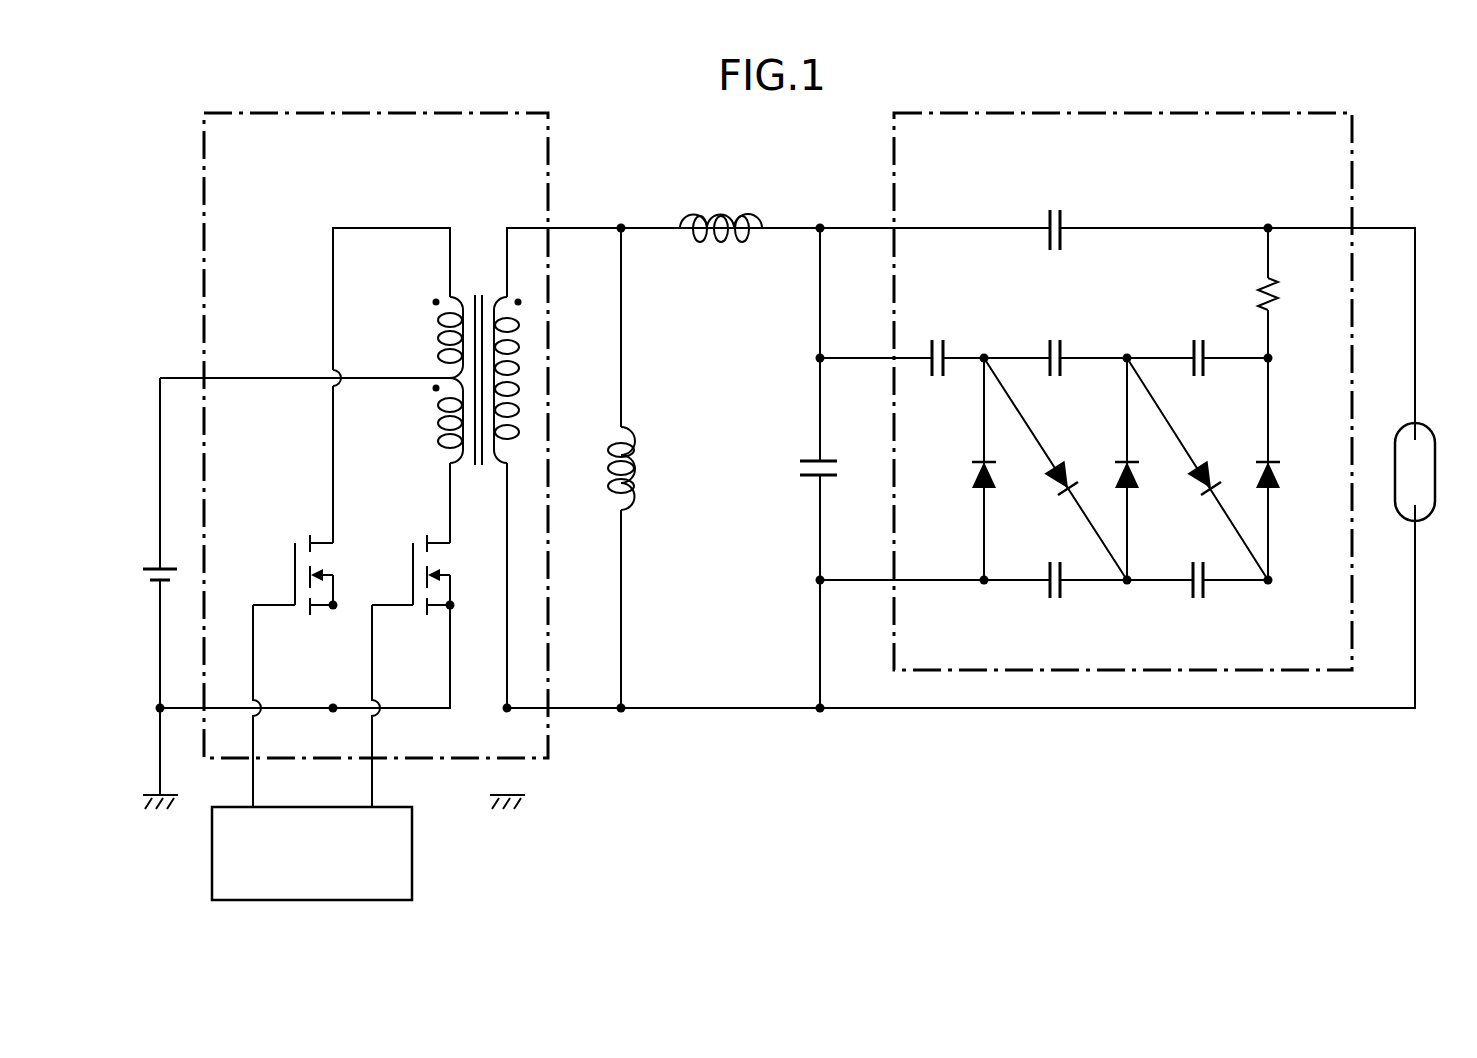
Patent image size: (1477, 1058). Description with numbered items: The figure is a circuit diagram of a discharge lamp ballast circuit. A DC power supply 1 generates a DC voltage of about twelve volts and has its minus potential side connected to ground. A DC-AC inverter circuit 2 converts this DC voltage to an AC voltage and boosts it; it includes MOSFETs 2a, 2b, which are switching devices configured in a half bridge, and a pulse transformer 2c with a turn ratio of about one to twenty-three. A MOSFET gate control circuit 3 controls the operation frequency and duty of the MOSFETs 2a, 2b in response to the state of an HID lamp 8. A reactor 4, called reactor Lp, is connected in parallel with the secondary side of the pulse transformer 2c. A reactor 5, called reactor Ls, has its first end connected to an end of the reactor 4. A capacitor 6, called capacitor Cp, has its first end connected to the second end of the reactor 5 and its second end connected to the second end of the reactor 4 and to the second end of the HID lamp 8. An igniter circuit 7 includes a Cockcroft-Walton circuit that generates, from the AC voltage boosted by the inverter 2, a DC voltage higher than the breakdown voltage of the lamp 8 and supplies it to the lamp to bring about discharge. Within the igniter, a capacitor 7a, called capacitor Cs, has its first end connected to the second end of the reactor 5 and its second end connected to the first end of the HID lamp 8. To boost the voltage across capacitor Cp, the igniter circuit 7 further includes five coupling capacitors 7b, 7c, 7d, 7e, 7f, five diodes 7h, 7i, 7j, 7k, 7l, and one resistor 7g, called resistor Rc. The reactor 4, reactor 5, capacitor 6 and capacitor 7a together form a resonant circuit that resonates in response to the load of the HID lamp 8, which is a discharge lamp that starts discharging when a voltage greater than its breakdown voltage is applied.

The DC power supply 1 is at (138, 579).
The DC-AC inverter circuit 2 is at (377, 112).
The MOSFET 2a is at (286, 546).
The MOSFET 2b is at (403, 546).
The pulse transformer 2c is at (430, 424).
The MOSFET gate control circuit 3 is at (414, 862).
The reactor Lp 4 is at (643, 470).
The reactor Ls 5 is at (721, 208).
The capacitor Cp 6 is at (794, 470).
The igniter circuit 7 is at (1122, 113).
The capacitor Cs 7a is at (1056, 207).
The capacitor Cc1 7b is at (940, 334).
The capacitor Cc2 7c is at (1056, 334).
The capacitor Cc3 7d is at (1199, 334).
The capacitor Cc4 7e is at (1056, 607).
The capacitor Cc5 7f is at (1199, 607).
The resistor Rc 7g is at (1289, 306).
The diode D1 7h is at (972, 479).
The diode D2 7i is at (1045, 484).
The diode D3 7j is at (1132, 490).
The diode D4 7k is at (1188, 470).
The diode D5 7l is at (1275, 490).
The HID lamp 8 is at (1444, 413).